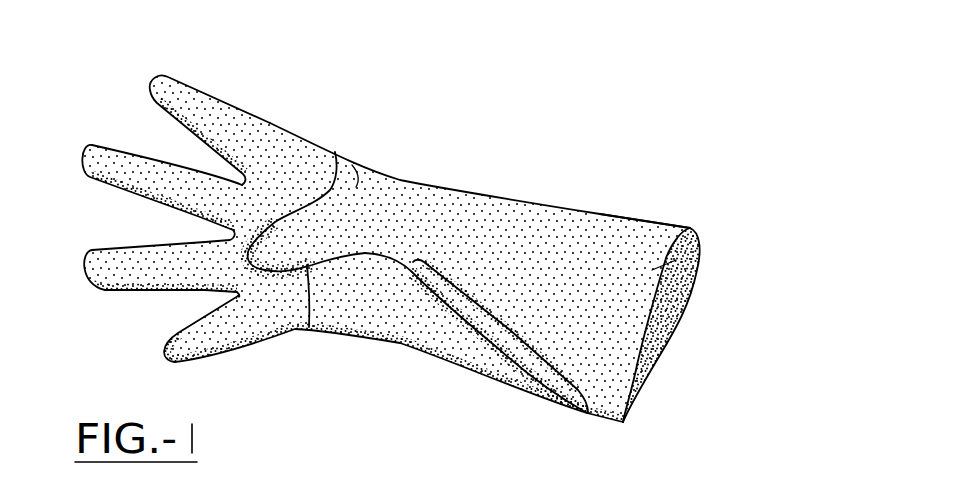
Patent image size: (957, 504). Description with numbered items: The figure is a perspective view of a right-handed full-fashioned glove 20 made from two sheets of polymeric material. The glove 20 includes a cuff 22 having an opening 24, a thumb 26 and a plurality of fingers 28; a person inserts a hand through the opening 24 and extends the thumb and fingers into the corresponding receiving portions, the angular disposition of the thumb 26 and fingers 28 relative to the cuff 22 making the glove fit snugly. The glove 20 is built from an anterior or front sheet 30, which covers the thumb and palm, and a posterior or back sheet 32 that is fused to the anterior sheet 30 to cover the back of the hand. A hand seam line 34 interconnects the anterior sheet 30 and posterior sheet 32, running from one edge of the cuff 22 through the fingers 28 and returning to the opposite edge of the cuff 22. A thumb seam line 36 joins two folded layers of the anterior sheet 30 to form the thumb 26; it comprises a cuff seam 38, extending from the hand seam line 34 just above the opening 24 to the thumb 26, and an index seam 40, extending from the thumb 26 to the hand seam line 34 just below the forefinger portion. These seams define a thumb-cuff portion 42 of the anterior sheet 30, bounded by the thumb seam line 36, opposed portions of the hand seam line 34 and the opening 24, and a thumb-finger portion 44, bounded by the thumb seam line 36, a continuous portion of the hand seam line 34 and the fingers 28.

The full-fashioned glove 20 is at (546, 141).
The cuff 22 is at (629, 217).
The opening 24 is at (660, 333).
The thumb 26 is at (278, 212).
The fingers 28 is at (189, 74).
The anterior sheet 30 is at (676, 260).
The posterior sheet 32 is at (690, 293).
The hand seam line 34 is at (113, 225).
The thumb seam line 36 is at (309, 327).
The cuff seam 38 is at (498, 327).
The index seam 40 is at (307, 130).
The thumb-cuff portion 42 is at (512, 250).
The thumb-finger portion 44 is at (388, 300).